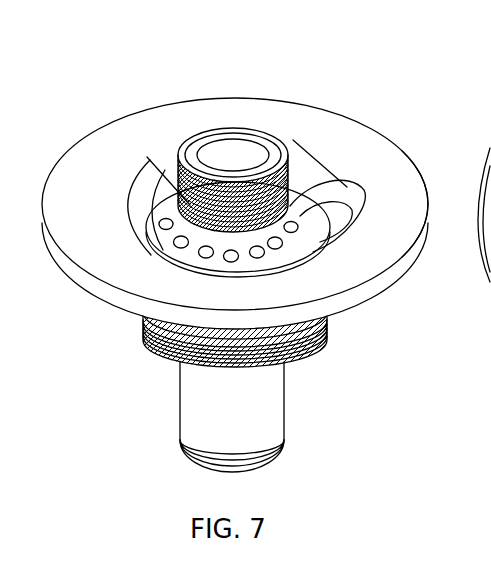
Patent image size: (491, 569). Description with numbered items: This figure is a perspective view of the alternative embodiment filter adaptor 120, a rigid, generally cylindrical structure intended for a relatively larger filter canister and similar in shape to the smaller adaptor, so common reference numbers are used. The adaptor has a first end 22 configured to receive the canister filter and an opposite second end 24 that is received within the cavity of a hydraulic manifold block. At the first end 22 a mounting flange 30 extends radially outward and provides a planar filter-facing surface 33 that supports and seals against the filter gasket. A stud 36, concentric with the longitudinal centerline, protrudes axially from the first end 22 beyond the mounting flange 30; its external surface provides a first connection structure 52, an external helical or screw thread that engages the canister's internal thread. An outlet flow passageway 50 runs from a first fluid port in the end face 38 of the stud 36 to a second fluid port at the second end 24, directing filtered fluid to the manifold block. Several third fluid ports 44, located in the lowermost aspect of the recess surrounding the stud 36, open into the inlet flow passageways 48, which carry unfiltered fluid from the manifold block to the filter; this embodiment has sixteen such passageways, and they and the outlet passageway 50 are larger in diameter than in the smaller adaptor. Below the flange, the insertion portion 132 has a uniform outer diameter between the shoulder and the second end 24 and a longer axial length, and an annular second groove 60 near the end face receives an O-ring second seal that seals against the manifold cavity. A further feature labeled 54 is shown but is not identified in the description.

The filter adaptor 120 is at (129, 25).
The first end 22 is at (336, 131).
The mounting flange 30 is at (379, 146).
The filter-facing surface 33 is at (425, 174).
The end face of the stud 38 is at (213, 136).
The outlet flow passageway 50 is at (230, 154).
The first connection structure 52 is at (299, 150).
The stud 36 is at (149, 160).
The third fluid ports 44 is at (137, 174).
The inlet flow passageways 48 is at (167, 245).
The external threads 54 is at (312, 353).
The insertion portion 132 is at (153, 397).
The second end 24 is at (181, 439).
The second groove 60 is at (285, 443).